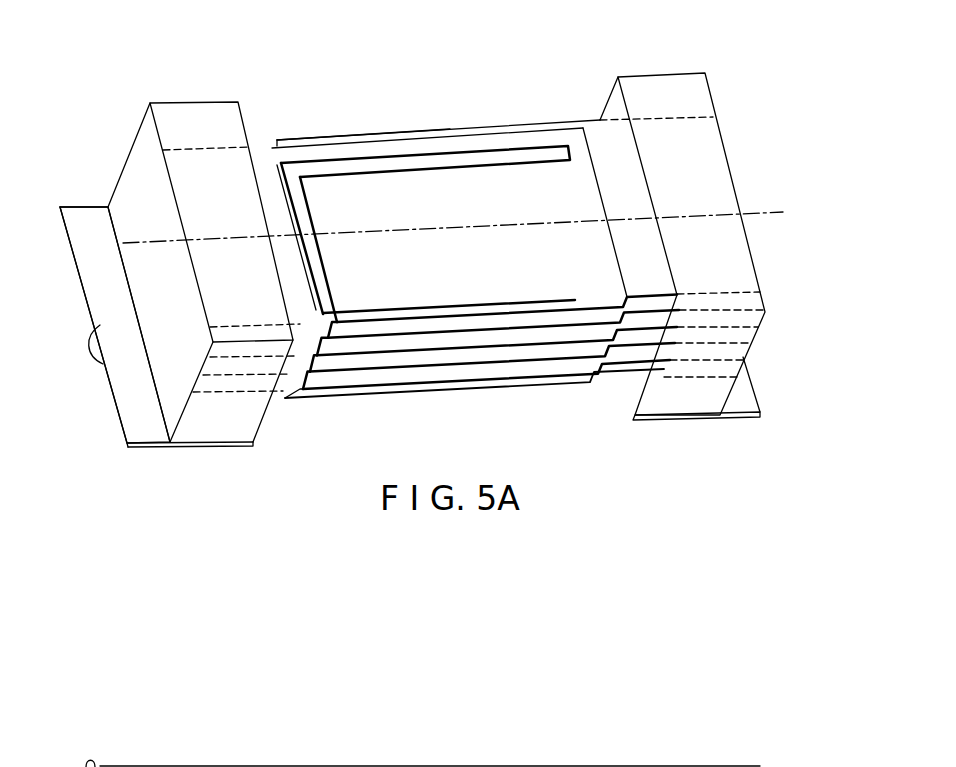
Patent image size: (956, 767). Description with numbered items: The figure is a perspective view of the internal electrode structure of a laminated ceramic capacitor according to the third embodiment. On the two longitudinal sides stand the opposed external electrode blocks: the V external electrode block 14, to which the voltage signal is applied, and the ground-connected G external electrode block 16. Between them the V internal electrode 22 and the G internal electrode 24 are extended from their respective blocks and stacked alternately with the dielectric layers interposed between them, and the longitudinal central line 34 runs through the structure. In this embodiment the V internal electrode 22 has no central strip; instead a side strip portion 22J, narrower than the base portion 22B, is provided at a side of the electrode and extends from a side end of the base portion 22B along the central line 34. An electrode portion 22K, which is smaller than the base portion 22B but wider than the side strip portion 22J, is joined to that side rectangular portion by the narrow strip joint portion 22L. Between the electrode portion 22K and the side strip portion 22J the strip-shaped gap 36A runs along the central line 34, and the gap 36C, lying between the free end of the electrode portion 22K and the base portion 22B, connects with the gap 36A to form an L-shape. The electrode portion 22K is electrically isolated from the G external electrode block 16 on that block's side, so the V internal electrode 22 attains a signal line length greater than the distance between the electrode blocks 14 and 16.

The V external electrode block 14 is at (197, 113).
The G external electrode block 16 is at (662, 87).
The V internal electrode 22 is at (480, 180).
The base portion 22B is at (232, 298).
The side strip portion 22J is at (347, 150).
The electrode portion 22K is at (477, 300).
The narrow strip joint portion 22L is at (585, 147).
The G internal electrode 24 is at (638, 277).
The central line 34 is at (760, 210).
The strip-shaped gap 36A is at (412, 160).
The gap 36C is at (318, 274).